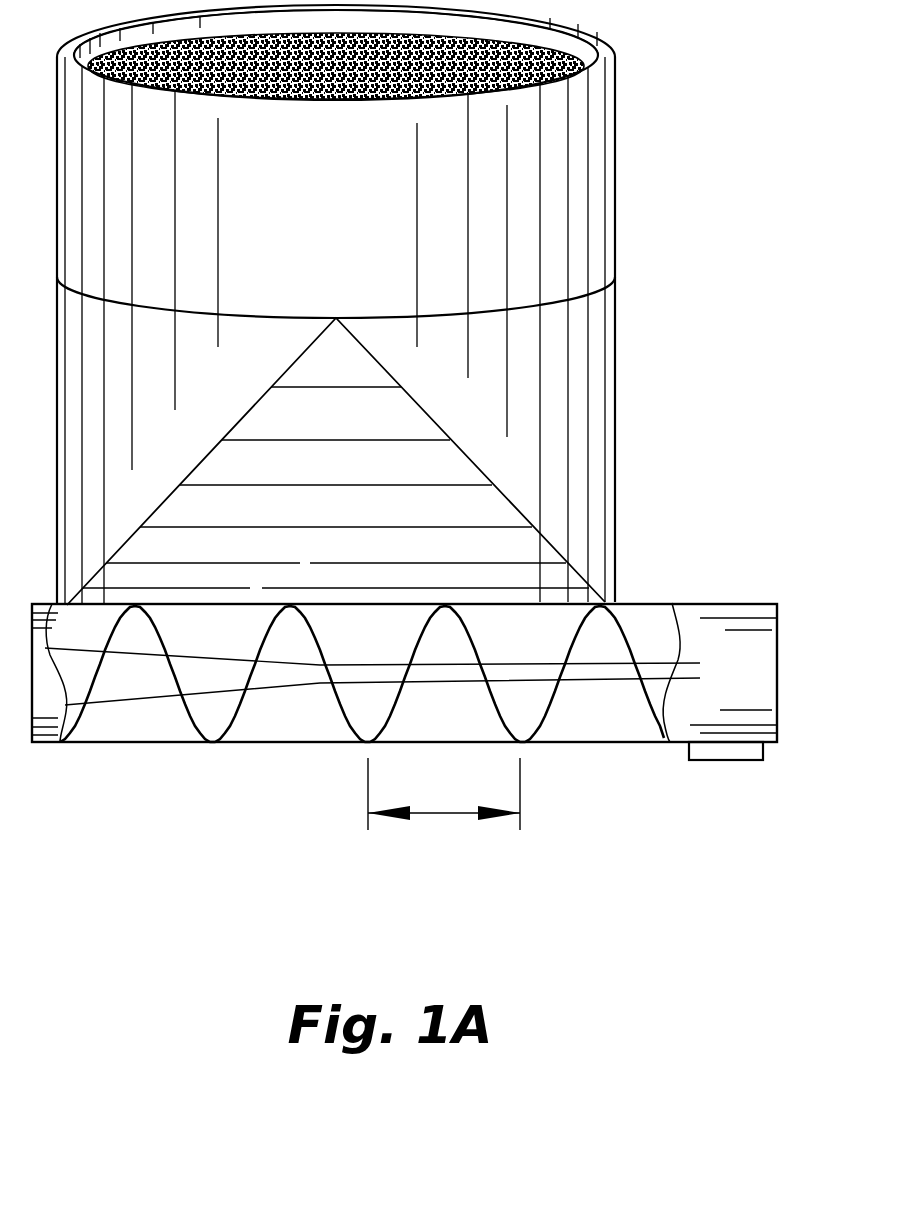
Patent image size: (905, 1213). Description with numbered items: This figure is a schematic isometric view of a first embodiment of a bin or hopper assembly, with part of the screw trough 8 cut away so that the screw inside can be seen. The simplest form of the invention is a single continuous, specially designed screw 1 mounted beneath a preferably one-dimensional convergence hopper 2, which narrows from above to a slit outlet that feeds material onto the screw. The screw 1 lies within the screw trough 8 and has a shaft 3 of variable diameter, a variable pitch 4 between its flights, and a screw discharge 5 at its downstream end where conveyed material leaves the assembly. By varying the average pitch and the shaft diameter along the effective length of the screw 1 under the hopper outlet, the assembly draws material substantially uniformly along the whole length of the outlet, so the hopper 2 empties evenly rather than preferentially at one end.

The screw 1 is at (300, 712).
The hopper 2 is at (325, 427).
The shaft 3 is at (148, 705).
The pitch 4 is at (445, 813).
The screw discharge 5 is at (765, 745).
The base plate 8 is at (622, 745).